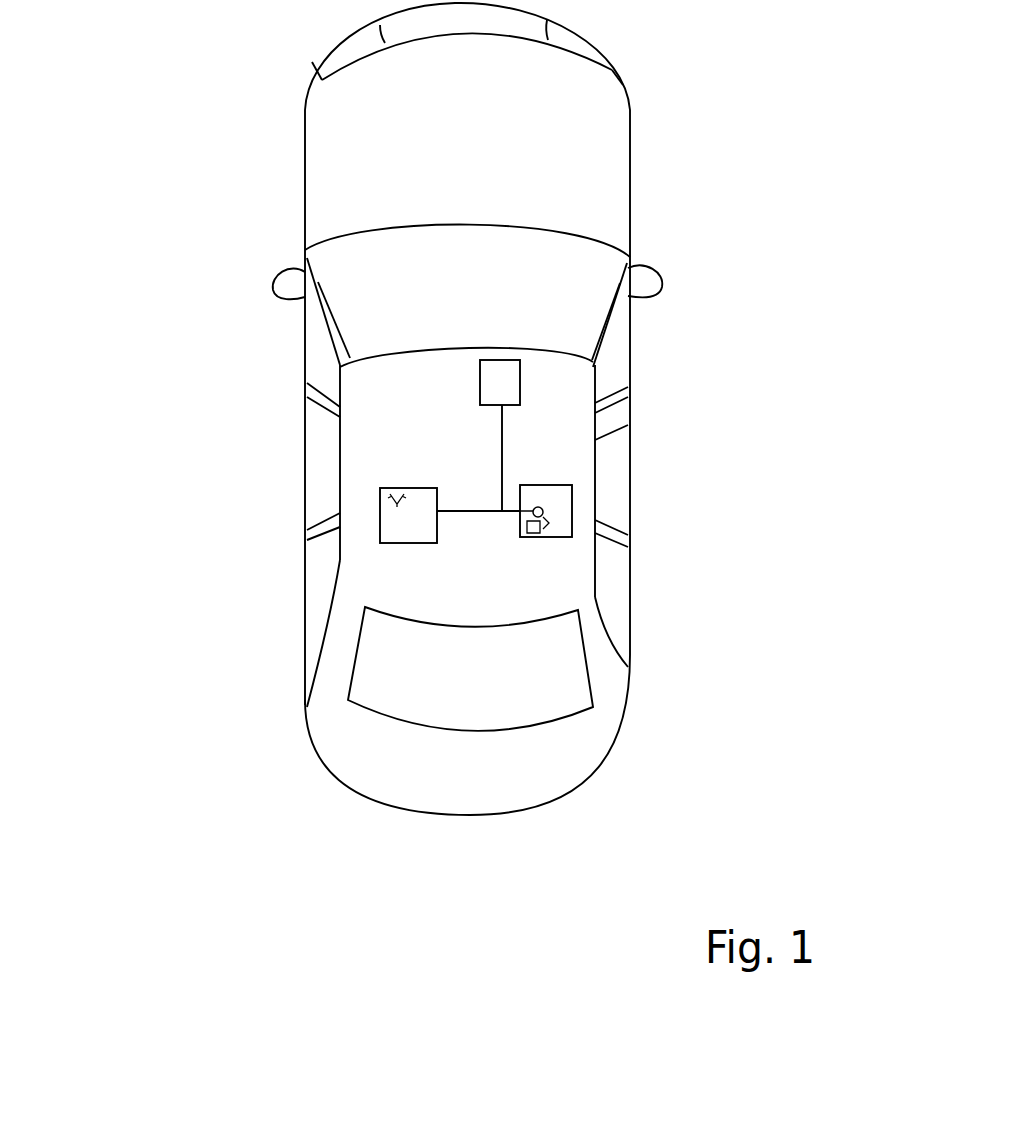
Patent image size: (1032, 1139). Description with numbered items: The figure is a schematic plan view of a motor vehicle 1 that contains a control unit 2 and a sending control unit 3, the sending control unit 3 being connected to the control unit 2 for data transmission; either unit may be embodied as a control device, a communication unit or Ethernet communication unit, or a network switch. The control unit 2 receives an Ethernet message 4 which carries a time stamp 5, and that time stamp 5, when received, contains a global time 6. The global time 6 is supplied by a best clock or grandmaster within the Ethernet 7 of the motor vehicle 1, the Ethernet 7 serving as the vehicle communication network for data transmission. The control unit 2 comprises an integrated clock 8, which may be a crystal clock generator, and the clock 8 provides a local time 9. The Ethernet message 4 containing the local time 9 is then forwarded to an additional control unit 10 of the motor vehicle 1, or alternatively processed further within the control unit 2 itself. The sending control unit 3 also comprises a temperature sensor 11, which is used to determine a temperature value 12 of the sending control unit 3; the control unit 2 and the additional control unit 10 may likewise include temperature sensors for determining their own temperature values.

The motor vehicle 1 is at (632, 155).
The control unit 2 is at (632, 510).
The sending control unit 3 is at (335, 552).
The Ethernet message 4 is at (595, 470).
The time stamp 5 is at (538, 485).
The global time 6 is at (578, 525).
The Ethernet 7 is at (462, 437).
The clock 8 is at (543, 523).
The local time 9 is at (520, 534).
The additional control unit 10 is at (593, 375).
The temperature sensor 11 is at (395, 492).
The temperature value 12 is at (243, 620).